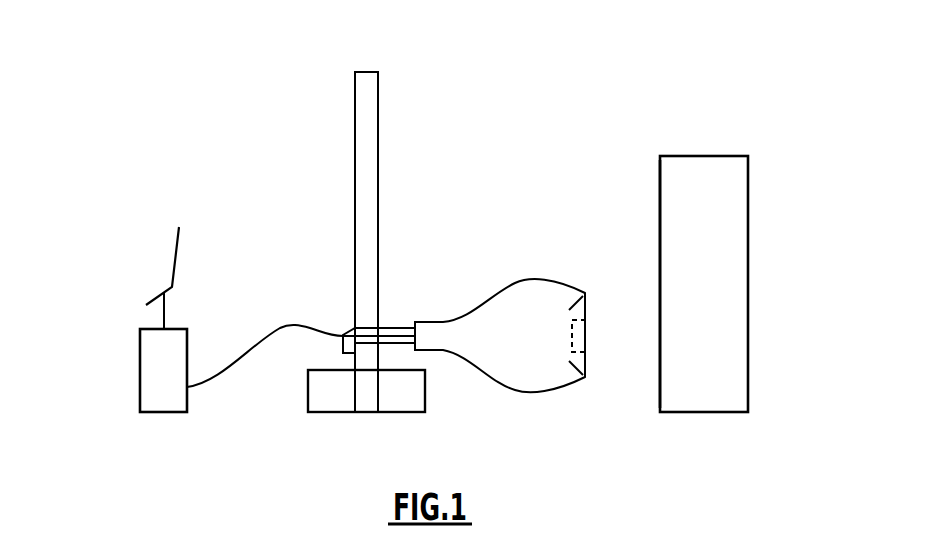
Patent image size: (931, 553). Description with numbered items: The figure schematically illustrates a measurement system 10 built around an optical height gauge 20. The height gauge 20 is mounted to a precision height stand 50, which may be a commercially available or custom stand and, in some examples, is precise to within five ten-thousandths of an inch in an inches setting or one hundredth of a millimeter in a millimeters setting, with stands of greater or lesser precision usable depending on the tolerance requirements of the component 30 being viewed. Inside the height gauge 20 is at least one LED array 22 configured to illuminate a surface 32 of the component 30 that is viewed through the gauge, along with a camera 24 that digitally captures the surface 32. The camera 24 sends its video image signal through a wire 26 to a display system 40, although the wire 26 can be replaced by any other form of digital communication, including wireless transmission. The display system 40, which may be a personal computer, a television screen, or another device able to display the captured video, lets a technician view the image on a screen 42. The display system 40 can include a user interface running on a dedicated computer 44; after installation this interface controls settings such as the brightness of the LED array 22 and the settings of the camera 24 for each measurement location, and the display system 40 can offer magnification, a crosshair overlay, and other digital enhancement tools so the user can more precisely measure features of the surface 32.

The measurement system 10 is at (600, 49).
The optical height gauge 20 is at (515, 302).
The LED array 22 is at (572, 303).
The camera 24 is at (585, 335).
The wire 26 is at (279, 325).
The component 30 is at (728, 242).
The surface 32 is at (658, 300).
The display system 40 is at (124, 256).
The screen 42 is at (177, 247).
The computer 44 is at (165, 373).
The precision height stand 50 is at (366, 82).